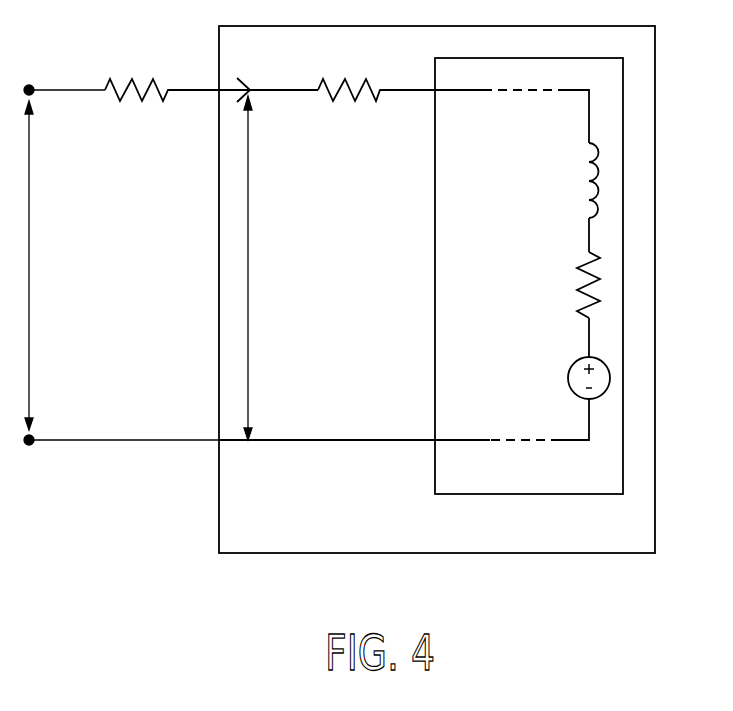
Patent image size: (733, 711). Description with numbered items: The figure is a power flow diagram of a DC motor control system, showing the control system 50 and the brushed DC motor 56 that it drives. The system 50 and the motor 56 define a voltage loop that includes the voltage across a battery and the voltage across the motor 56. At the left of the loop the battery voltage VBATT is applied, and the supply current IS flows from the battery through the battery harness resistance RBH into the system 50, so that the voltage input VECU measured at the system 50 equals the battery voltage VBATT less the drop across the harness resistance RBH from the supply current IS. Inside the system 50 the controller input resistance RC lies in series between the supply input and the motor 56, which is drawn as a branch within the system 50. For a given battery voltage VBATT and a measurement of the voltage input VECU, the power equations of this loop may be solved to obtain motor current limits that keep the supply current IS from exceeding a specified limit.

The control system 50 is at (428, 289).
The motor 56 is at (615, 458).
The battery harness resistance RBH is at (170, 71).
The controller input resistance RC is at (376, 73).
The supply current IS is at (277, 80).
The battery voltage VBATT is at (60, 265).
The voltage input VECU is at (275, 268).